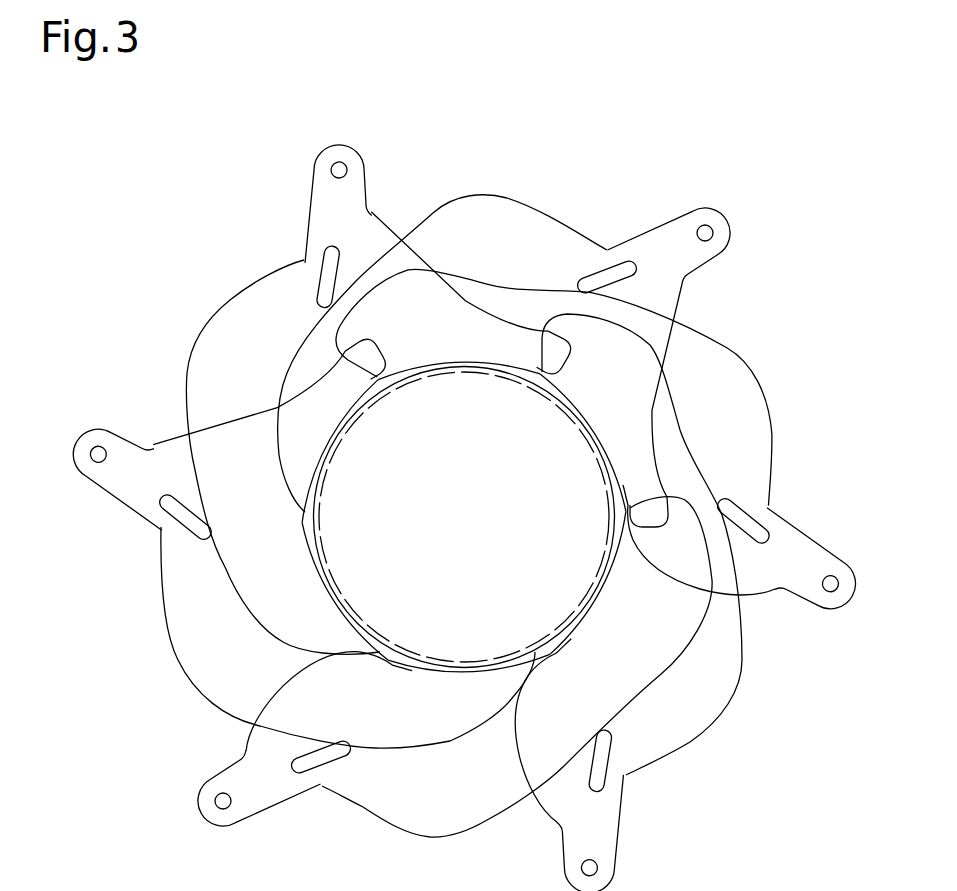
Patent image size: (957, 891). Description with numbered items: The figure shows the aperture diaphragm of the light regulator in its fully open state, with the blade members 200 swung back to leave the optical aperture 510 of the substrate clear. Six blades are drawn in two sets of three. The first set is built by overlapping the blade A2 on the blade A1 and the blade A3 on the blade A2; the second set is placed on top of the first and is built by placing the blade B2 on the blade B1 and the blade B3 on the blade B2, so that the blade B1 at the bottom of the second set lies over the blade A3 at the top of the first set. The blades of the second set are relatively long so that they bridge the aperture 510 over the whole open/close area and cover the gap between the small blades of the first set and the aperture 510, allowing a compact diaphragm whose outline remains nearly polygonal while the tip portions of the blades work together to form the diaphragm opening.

The blade members 200 is at (746, 220).
The optical aperture 510 is at (565, 405).
The blade A1 is at (581, 236).
The blade A2 is at (247, 270).
The blade A3 is at (163, 568).
The blade B1 is at (297, 800).
The blade B2 is at (624, 806).
The blade B3 is at (795, 536).